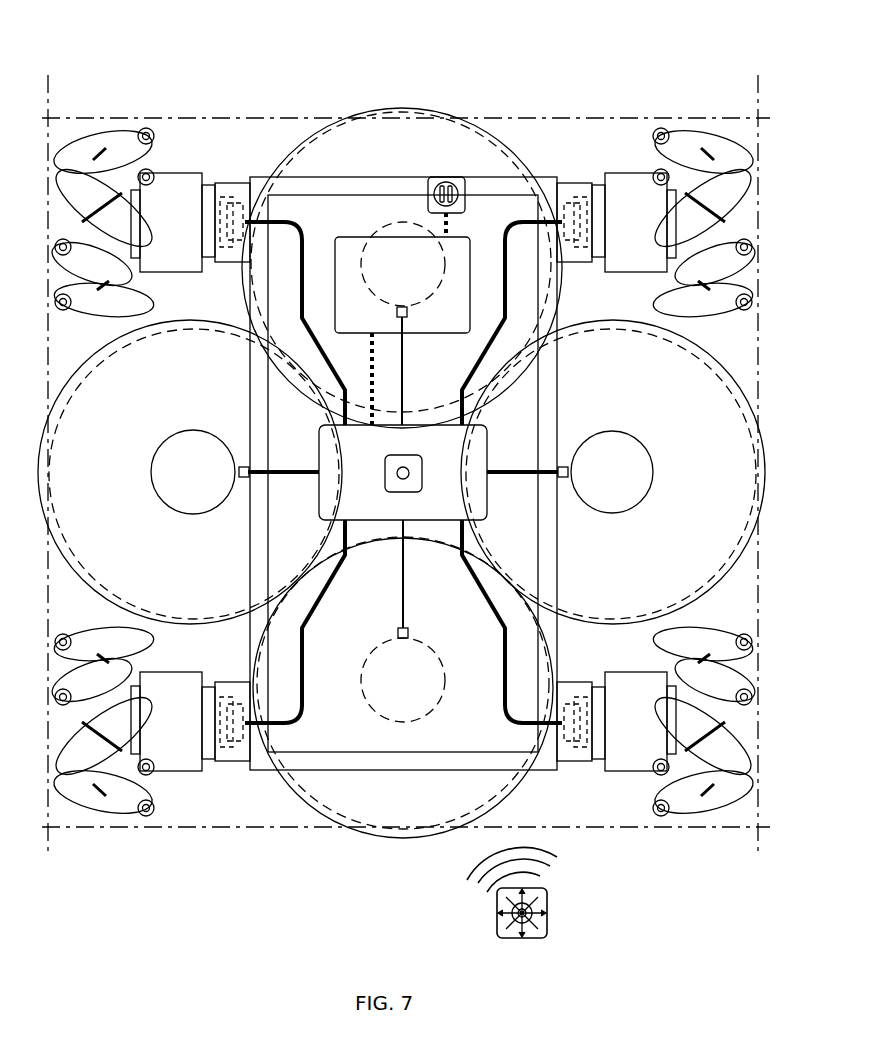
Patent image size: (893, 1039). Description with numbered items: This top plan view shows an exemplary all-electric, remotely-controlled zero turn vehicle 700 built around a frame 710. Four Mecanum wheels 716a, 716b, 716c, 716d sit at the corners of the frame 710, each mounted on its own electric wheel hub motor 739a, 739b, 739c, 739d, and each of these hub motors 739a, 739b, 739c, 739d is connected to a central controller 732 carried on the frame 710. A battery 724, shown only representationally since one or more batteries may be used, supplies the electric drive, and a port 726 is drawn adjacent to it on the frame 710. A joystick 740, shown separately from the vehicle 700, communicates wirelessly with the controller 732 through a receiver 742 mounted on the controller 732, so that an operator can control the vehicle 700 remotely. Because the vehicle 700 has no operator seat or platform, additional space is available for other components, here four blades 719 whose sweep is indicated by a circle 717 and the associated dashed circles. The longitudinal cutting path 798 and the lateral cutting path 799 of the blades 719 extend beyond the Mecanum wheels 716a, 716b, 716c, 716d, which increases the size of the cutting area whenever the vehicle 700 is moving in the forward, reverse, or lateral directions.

The zero turn vehicle 700 is at (222, 80).
The frame 710 is at (250, 388).
The Mecanum wheel 716a is at (125, 128).
The Mecanum wheel 716b is at (682, 130).
The Mecanum wheel 716c is at (125, 818).
The Mecanum wheel 716d is at (680, 818).
The circle 717 is at (403, 108).
The blade 719 is at (482, 142).
The battery 724 is at (462, 330).
The charging port 726 is at (438, 180).
The controller 732 is at (379, 512).
The electric wheel hub motor 739a is at (196, 218).
The electric wheel hub motor 739b is at (659, 218).
The electric wheel hub motor 739c is at (196, 746).
The electric wheel hub motor 739d is at (659, 746).
The joystick 740 is at (548, 900).
The receiver 742 is at (403, 455).
The longitudinal cutting path 798 is at (55, 113).
The lateral cutting path 799 is at (273, 118).